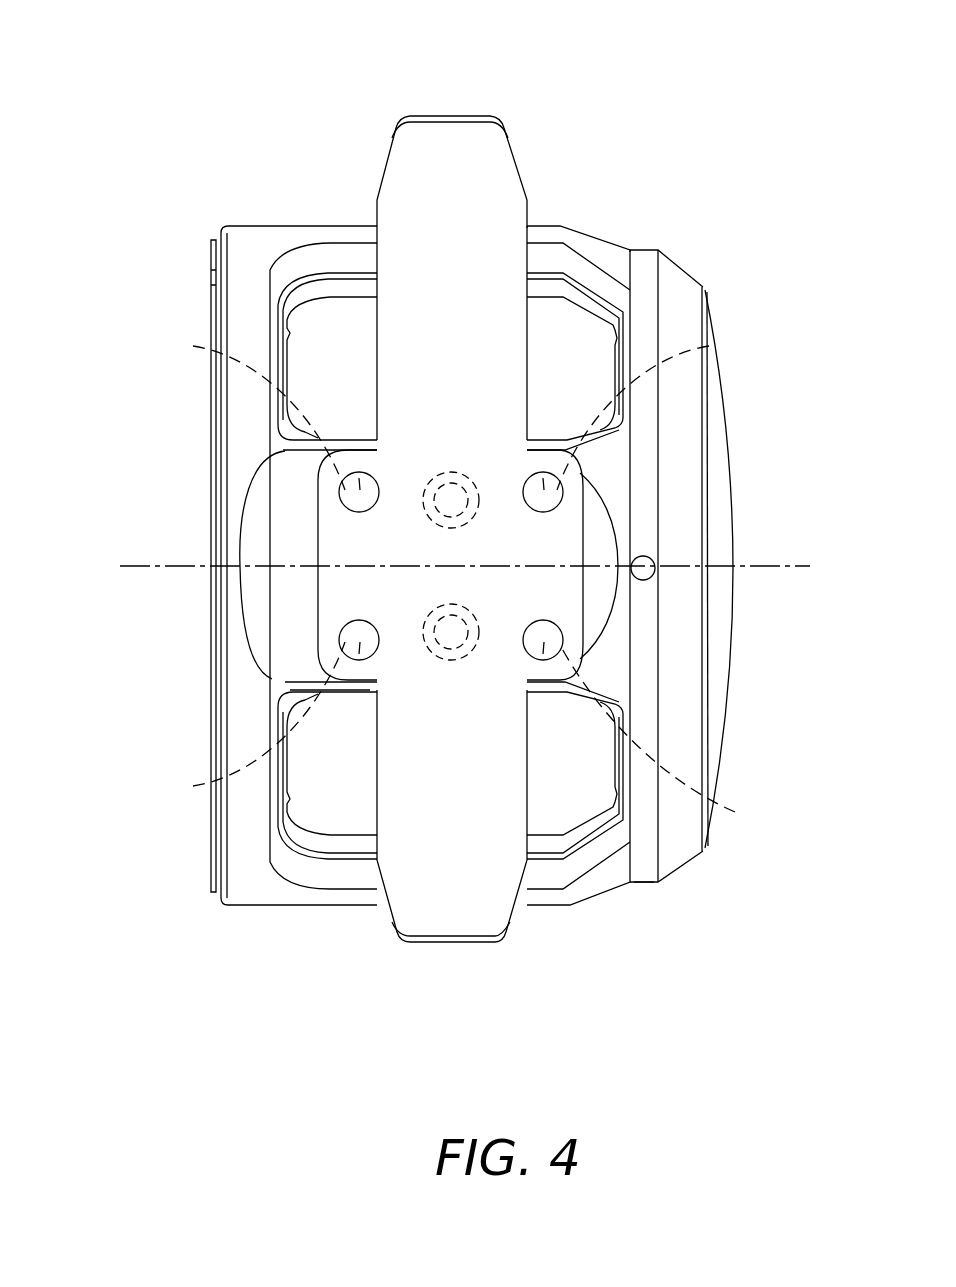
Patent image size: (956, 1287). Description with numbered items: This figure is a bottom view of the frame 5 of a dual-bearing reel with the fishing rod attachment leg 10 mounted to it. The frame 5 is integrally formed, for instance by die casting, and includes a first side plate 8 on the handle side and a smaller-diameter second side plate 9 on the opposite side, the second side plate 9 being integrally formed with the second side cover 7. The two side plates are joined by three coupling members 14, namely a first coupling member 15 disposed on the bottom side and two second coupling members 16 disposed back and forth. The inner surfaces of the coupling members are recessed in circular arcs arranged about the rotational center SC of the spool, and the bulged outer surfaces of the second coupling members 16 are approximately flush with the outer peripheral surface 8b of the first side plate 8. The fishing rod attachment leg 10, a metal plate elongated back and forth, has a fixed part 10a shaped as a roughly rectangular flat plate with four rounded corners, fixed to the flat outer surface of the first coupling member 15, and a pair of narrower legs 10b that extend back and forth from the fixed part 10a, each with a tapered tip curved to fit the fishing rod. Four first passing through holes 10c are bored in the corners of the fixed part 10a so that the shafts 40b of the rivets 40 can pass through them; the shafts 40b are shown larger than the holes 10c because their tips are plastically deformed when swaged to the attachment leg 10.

The frame 5 is at (714, 222).
The second side cover 7 is at (720, 662).
The first side plate 8 is at (228, 908).
The outer peripheral surface 8b is at (250, 224).
The second side plate 9 is at (645, 877).
The fishing rod attachment leg 10 is at (533, 130).
The fixed part 10a is at (307, 475).
The legs 10b is at (417, 177).
The first passing through holes 10c is at (457, 576).
The coupling members 14 is at (588, 205).
The first coupling member 15 is at (340, 687).
The second coupling members 16 is at (345, 222).
The rivets 40 is at (372, 473).
The shaft 40b is at (339, 494).
The rotational center SC is at (187, 560).